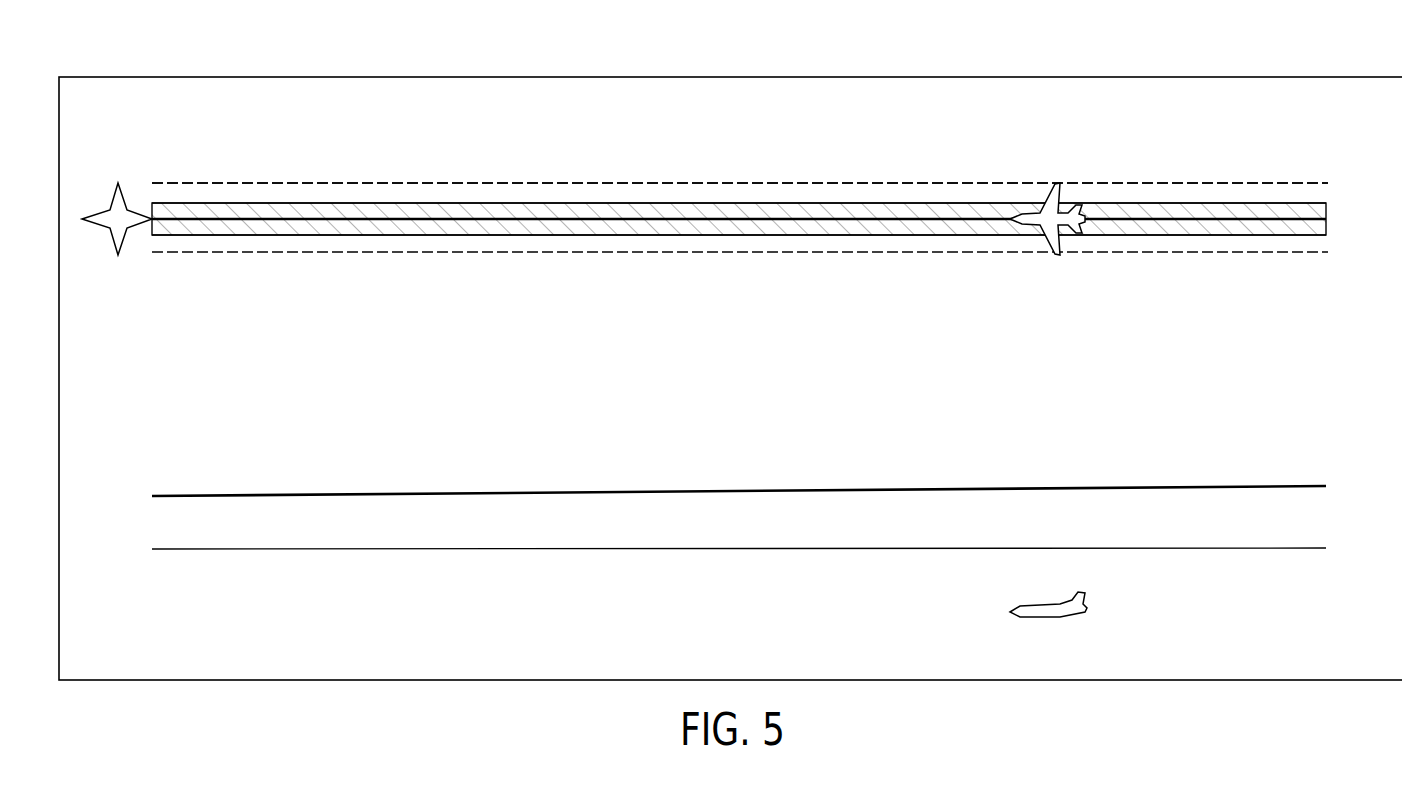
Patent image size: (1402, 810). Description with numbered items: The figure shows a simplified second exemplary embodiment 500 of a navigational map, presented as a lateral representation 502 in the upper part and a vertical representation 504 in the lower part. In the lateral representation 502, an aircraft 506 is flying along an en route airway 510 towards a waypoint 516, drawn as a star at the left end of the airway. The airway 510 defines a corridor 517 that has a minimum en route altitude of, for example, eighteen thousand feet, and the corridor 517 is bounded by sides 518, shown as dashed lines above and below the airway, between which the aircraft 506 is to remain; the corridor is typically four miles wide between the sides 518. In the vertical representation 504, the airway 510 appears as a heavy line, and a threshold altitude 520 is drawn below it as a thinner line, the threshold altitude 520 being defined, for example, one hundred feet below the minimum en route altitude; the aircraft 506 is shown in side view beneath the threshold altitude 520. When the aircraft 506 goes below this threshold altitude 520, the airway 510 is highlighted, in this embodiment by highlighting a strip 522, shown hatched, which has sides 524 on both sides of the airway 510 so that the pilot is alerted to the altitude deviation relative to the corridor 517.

The second exemplary embodiment 500 is at (1322, 77).
The lateral representation 502 is at (1339, 219).
The vertical representation 504 is at (1338, 512).
The aircraft 506 is at (1058, 185).
The en route airway 510 is at (668, 216).
The waypoint 516 is at (111, 211).
The corridor 517 is at (453, 195).
The sides 518 is at (350, 183).
The threshold altitude 520 is at (408, 549).
The strip 522 is at (853, 213).
The sides 524 is at (945, 203).